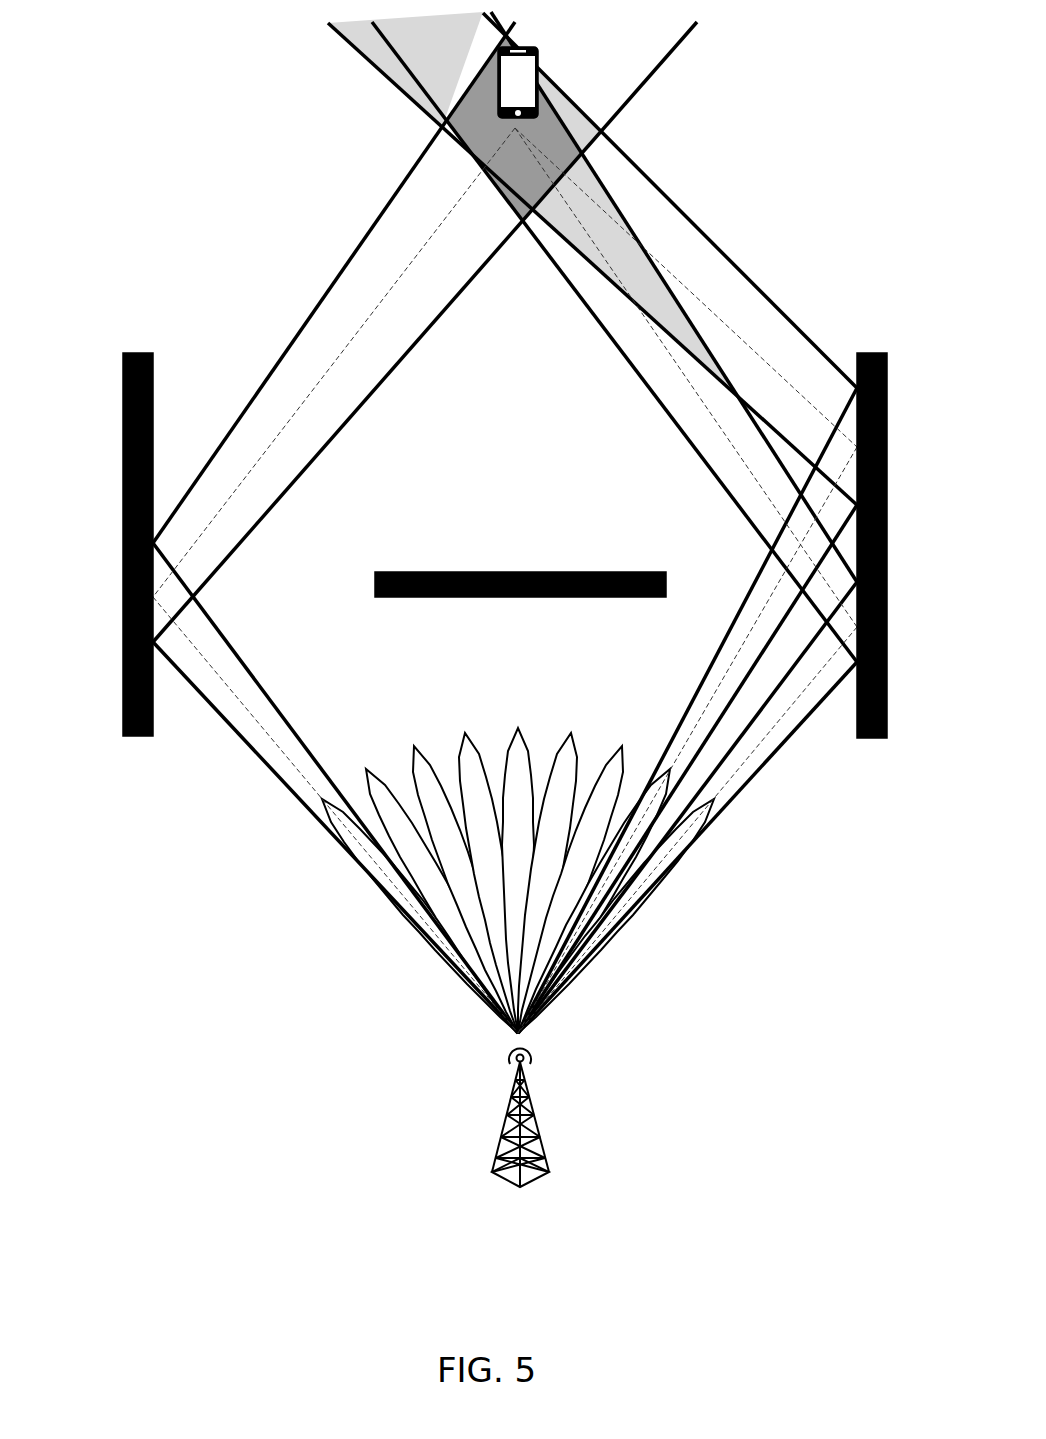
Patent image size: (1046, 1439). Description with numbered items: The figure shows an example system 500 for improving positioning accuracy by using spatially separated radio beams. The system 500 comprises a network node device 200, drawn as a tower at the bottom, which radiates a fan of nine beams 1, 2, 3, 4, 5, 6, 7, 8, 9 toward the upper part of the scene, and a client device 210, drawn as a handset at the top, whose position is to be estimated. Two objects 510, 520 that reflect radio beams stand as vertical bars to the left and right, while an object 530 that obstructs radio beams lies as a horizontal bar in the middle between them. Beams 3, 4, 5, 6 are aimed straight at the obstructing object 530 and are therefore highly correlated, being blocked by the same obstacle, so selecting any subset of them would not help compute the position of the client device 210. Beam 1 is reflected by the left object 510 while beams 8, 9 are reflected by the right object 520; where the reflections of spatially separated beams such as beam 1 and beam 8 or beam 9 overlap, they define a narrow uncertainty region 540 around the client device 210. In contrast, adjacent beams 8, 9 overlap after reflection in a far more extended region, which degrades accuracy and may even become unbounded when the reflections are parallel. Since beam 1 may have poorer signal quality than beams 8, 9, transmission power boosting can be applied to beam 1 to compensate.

The network node device 200 is at (540, 1114).
The client device 210 is at (537, 48).
The system 500 is at (207, 1122).
The object that reflects radio beams 510 is at (123, 493).
The object that reflects radio beams 520 is at (887, 393).
The object that obstructs radio beams 530 is at (583, 572).
The uncertainty region 540 is at (562, 133).
The beam 1 is at (414, 905).
The beam 2 is at (441, 888).
The beam 3 is at (465, 876).
The beam 4 is at (488, 869).
The beam 5 is at (518, 866).
The beam 6 is at (552, 869).
The beam 7 is at (578, 879).
The beam 8 is at (602, 891).
The beam 9 is at (625, 904).